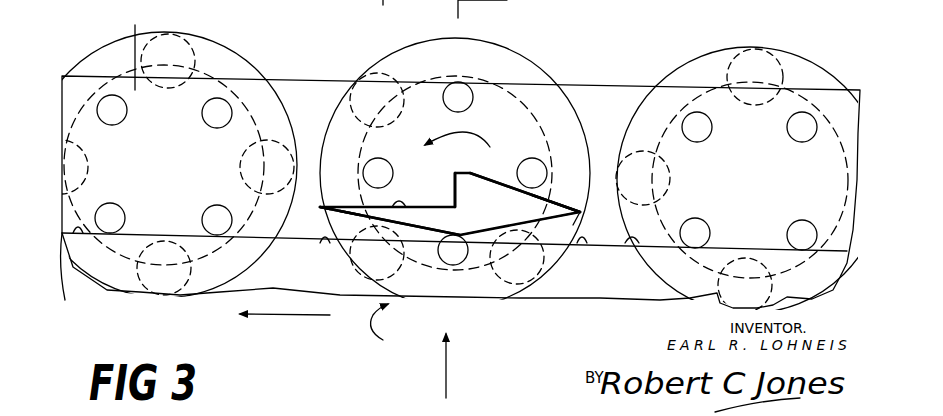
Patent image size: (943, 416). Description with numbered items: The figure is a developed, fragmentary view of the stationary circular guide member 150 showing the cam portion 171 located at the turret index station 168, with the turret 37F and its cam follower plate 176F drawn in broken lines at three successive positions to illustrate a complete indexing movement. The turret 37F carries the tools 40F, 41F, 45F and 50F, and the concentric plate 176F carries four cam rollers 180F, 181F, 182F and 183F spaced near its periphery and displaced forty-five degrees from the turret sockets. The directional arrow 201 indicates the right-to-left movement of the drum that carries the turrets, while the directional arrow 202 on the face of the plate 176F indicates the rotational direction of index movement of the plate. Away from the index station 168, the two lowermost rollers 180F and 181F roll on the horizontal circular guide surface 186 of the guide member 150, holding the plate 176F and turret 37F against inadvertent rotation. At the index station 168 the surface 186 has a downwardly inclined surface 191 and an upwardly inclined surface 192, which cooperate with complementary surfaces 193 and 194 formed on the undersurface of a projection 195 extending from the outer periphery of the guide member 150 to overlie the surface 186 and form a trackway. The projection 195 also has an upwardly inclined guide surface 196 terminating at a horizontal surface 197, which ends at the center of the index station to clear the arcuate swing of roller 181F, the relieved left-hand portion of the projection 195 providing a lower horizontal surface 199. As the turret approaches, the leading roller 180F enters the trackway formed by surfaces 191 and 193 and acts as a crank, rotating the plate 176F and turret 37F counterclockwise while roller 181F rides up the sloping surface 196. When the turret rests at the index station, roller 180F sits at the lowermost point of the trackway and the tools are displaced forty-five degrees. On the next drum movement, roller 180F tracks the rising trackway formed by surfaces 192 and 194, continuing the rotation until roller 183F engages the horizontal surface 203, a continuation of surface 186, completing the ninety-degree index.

The circular guide member 150 is at (603, 92).
The horizontal surface 203 is at (80, 275).
The turret 37F is at (113, 43).
The tool 45F is at (195, 32).
The circular plate 176F is at (590, 117).
The tool 41F is at (78, 173).
The tool 50F is at (248, 173).
The tool 40F is at (157, 310).
The cam roller 182F is at (113, 115).
The cam roller 181F is at (213, 128).
The cam roller 183F is at (105, 215).
The cam roller 180F is at (217, 213).
The projection 195 is at (488, 204).
The horizontal surface 197 is at (453, 175).
The upwardly inclined guide surface 196 is at (540, 193).
The complementary surface 193 is at (553, 177).
The lower horizontal surface 199 is at (406, 210).
The upwardly inclined surface 192 is at (325, 232).
The complementary surface 194 is at (360, 217).
The downwardly inclined surface 191 is at (587, 243).
The horizontal circular guide surface 186 is at (628, 238).
The directional arrow 202 is at (461, 132).
The directional arrow 201 is at (300, 318).
The cam portion 171 is at (395, 327).
The index station 168 is at (443, 385).